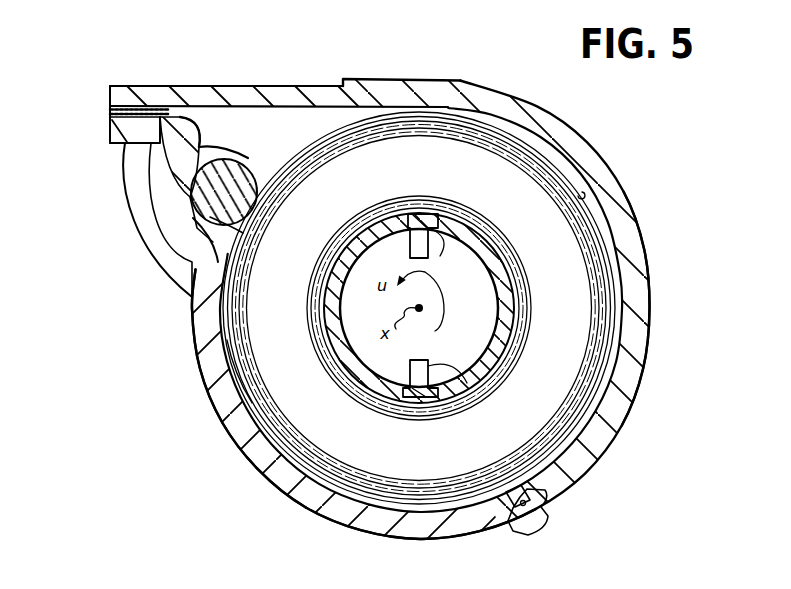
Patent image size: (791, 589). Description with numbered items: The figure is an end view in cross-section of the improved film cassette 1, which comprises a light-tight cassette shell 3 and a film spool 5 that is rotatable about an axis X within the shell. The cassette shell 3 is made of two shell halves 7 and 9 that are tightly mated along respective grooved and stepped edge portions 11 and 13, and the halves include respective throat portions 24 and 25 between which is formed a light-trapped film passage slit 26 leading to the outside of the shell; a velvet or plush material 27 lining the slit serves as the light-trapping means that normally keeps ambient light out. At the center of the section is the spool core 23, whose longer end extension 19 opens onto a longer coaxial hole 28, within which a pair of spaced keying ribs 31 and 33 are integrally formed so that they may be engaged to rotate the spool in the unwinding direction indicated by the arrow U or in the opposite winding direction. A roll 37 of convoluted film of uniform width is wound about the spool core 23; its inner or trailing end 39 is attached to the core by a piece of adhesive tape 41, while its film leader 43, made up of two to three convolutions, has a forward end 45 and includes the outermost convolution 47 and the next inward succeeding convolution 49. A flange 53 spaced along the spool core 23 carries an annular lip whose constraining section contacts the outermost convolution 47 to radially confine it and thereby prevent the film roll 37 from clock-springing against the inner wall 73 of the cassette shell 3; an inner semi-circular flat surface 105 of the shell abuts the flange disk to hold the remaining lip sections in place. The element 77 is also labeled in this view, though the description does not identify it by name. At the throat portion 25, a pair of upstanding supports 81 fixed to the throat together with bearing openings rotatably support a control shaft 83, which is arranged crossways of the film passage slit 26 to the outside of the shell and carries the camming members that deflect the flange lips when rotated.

The film cassette 1 is at (150, 56).
The cassette shell 3 is at (372, 540).
The film spool 5 is at (603, 383).
The shell half 7 is at (402, 82).
The shell half 9 is at (327, 518).
The grooved and stepped edge portion 11 is at (543, 490).
The grooved and stepped edge portion 13 is at (510, 523).
The longer end extension 19 is at (484, 293).
The spool core 23 is at (478, 342).
The throat portion 24 is at (162, 87).
The throat portion 25 is at (118, 146).
The film passage slit 26 is at (217, 124).
The velvet or plush material 27 is at (110, 111).
The longer coaxial hole 28 is at (505, 282).
The keying rib 31 is at (443, 243).
The keying rib 33 is at (462, 392).
The film roll 37 is at (282, 405).
The trailing end 39 is at (350, 362).
The adhesive tape 41 is at (313, 350).
The film leader 43 is at (462, 123).
The forward end 45 is at (372, 118).
The outermost convolution 47 is at (507, 142).
The next inward succeeding convolution 49 is at (567, 150).
The flange 53 is at (268, 487).
The inner wall 73 is at (578, 196).
The liner gap 77 is at (237, 363).
The upstanding support 81 is at (186, 228).
The control shaft 83 is at (167, 273).
The inner semi-circular flat surface 105 is at (198, 165).